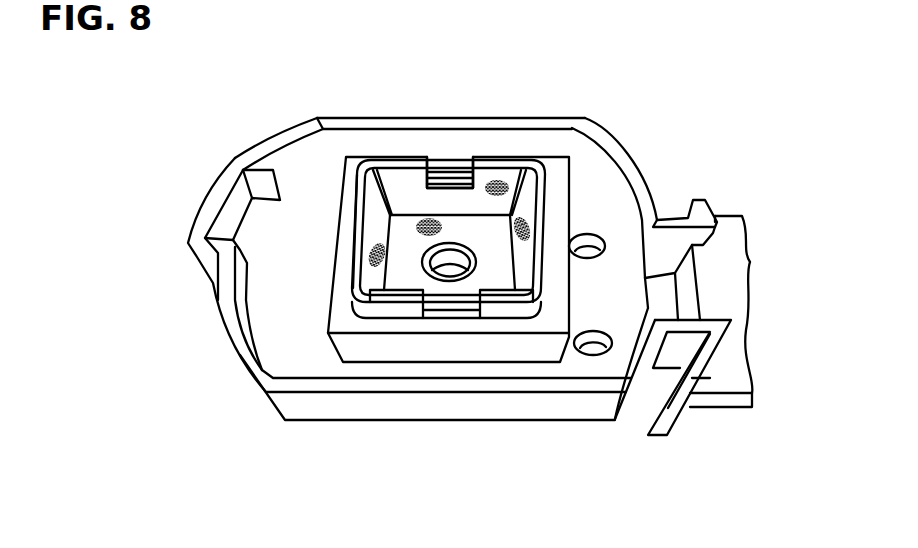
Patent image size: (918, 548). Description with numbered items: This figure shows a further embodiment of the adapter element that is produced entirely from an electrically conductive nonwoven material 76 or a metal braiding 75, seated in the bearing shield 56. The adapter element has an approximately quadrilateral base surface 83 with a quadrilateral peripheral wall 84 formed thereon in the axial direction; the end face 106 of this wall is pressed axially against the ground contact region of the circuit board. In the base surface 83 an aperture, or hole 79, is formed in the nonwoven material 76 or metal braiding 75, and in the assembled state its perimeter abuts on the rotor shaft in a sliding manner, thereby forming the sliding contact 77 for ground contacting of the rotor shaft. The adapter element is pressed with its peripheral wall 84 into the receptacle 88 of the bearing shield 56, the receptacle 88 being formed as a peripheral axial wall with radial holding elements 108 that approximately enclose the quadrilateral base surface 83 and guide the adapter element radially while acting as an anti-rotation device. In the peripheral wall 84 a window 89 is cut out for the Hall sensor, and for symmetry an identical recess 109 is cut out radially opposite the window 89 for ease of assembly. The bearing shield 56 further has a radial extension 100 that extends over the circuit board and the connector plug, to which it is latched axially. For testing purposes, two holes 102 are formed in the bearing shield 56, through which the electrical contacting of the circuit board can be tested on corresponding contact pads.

The bearing shield 56 is at (345, 205).
The metal braiding 75 is at (430, 165).
The nonwoven material 76 is at (408, 237).
The sliding contact 77 is at (457, 255).
The hole 79 is at (475, 176).
The base surface 83 is at (410, 277).
The peripheral wall 84 is at (527, 263).
The receptacle 88 is at (547, 222).
The window 89 is at (446, 185).
The radial extension 100 is at (720, 275).
The holes 102 is at (590, 253).
The end face 106 is at (360, 257).
The radial holding elements 108 is at (347, 228).
The recess 109 is at (451, 312).